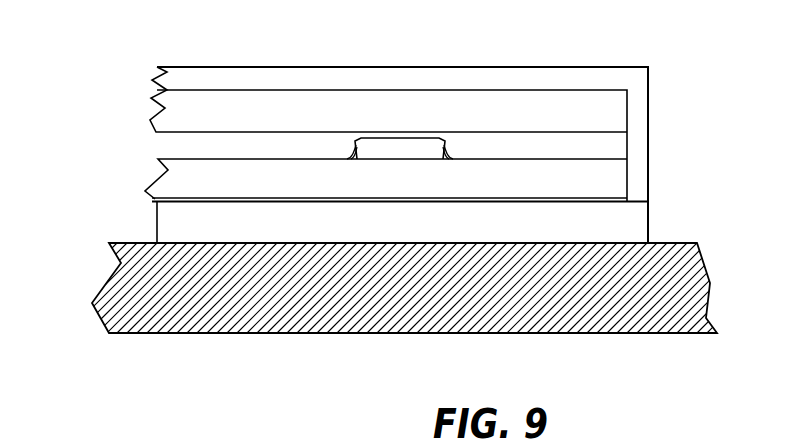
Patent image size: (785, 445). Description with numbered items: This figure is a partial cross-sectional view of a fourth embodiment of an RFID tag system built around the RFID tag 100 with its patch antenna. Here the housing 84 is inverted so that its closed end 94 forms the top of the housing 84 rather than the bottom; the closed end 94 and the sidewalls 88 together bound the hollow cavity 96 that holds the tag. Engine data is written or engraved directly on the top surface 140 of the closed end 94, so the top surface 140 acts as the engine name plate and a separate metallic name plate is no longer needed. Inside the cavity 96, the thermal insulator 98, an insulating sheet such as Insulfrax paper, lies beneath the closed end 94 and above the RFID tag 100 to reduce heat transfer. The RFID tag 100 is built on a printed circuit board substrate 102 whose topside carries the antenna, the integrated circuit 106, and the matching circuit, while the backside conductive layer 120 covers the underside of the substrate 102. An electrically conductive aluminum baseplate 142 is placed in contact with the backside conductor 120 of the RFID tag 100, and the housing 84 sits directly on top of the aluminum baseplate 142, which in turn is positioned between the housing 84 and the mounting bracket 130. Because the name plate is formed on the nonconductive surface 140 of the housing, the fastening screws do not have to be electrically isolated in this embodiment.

The housing 84 is at (659, 96).
The sidewall 88 is at (638, 132).
The closed end 94 is at (575, 75).
The cavity 96 is at (152, 143).
The thermal insulator 98 is at (388, 99).
The RFID tag 100 is at (158, 169).
The printed circuit board substrate 102 is at (247, 175).
The integrated circuit 106 is at (462, 146).
The backside conductive layer 120 is at (152, 198).
The mounting bracket 130 is at (698, 287).
The top surface 140 is at (252, 67).
The aluminum baseplate 142 is at (170, 222).